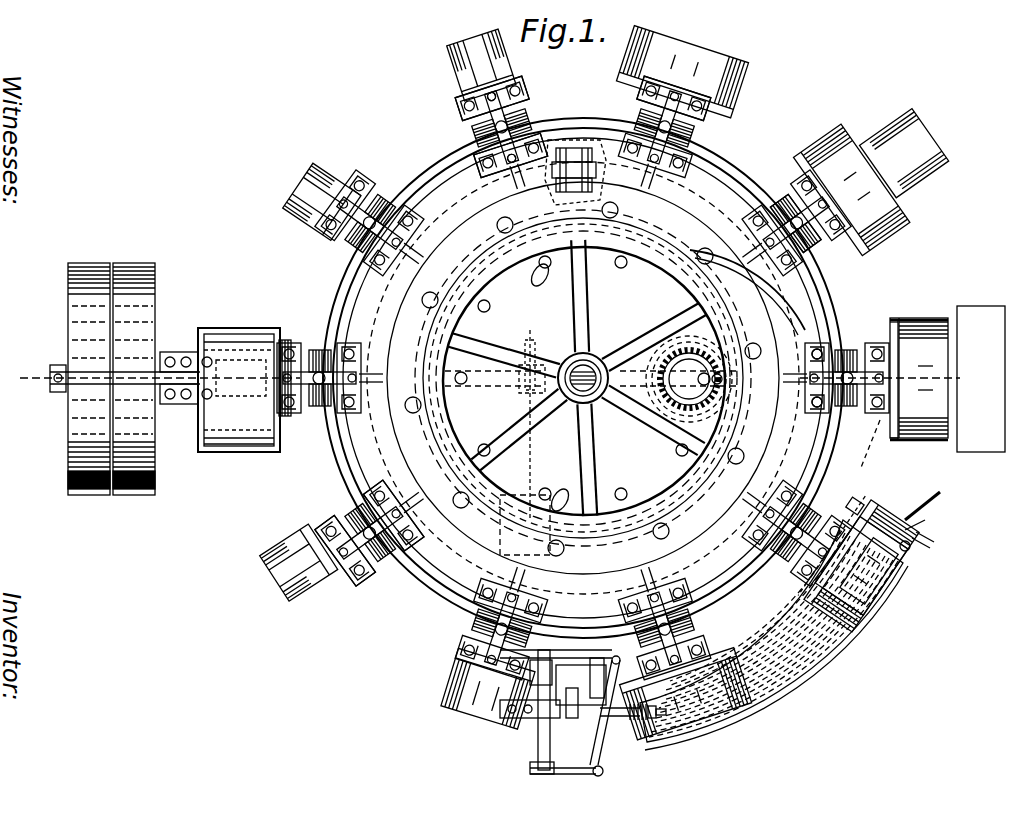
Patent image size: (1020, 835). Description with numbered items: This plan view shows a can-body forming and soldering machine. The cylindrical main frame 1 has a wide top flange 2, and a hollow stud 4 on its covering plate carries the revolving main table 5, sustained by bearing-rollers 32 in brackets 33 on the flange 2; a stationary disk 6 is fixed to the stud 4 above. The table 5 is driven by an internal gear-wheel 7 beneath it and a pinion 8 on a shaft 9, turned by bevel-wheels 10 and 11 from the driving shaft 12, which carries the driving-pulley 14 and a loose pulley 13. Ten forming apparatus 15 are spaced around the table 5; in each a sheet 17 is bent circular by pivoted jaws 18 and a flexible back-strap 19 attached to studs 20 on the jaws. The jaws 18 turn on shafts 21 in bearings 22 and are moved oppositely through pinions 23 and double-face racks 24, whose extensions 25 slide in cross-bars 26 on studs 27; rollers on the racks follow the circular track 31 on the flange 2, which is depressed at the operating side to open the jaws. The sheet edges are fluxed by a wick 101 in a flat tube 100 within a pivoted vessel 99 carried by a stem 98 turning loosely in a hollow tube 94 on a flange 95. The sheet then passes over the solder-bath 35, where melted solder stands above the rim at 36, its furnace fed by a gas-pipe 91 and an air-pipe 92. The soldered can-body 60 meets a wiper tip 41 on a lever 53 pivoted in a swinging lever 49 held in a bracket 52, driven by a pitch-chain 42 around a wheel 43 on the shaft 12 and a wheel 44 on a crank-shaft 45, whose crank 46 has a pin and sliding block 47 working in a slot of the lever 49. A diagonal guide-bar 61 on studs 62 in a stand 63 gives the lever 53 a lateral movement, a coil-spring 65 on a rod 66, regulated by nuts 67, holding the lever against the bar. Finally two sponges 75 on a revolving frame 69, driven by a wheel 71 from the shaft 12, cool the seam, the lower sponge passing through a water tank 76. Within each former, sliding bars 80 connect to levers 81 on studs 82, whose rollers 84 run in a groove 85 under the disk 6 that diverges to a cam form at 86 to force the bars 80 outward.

The main frame 1 is at (416, 568).
The flange 2 is at (445, 518).
The hollow stud 4 is at (519, 429).
The main table 5 is at (370, 485).
The stationary disk 6 is at (440, 452).
The internal gear-wheel 7 is at (676, 280).
The pinion 8 is at (689, 379).
The shaft 9 is at (698, 387).
The bevel-wheel 10 is at (700, 345).
The bevel-wheel 11 is at (641, 450).
The main driving-shaft 12 is at (371, 326).
The loose pulley 13 is at (89, 369).
The main driving-pulley 14 is at (134, 369).
The forming apparatus 15 is at (596, 372).
The sheet 17 is at (981, 379).
The pivoted jaws 18 is at (890, 358).
The flexible back-strap 19 is at (585, 395).
The studs 20 is at (930, 450).
The oscillating shafts 21 is at (570, 290).
The bearings 22 is at (494, 254).
The pinions 23 is at (363, 440).
The double-face racks 24 is at (334, 448).
The cylindrical extension 25 is at (386, 229).
The cross-bars 26 is at (449, 201).
The studs 27 is at (460, 108).
The circular track 31 is at (567, 378).
The bearing-rollers 32 is at (574, 146).
The brackets 33 is at (598, 140).
The solder-bath 35 is at (824, 672).
The raised solder level 36 is at (786, 697).
The wiper tip 41 is at (602, 666).
The pitch-chain 42 is at (541, 475).
The wheel 43 is at (533, 376).
The wheel 44 is at (556, 646).
The crank-shaft 45 is at (559, 659).
The crank 46 is at (581, 685).
The pin and sliding block 47 is at (538, 730).
The swinging lever 49 is at (604, 716).
The bracket 52 is at (500, 718).
The second lever 53 is at (569, 701).
The can-body 60 is at (836, 199).
The diagonal guide-bar 61 is at (608, 712).
The studs 62 is at (583, 708).
The stand 63 is at (527, 759).
The coil-spring 65 is at (636, 723).
The rod 66 is at (651, 724).
The nuts 67 is at (631, 702).
The revolving frame 69 is at (200, 342).
The wheel 71 is at (288, 354).
The sponges 75 is at (125, 390).
The tank 76 is at (244, 444).
The sliding bars 80 is at (632, 289).
The levers 81 is at (564, 378).
The studs 82 is at (629, 380).
The rollers 84 is at (578, 383).
The groove 85 is at (524, 387).
The cam form 86 is at (749, 292).
The gas-pipe 91 is at (930, 500).
The air-pipe 92 is at (879, 571).
The hollow supporting-tube 94 is at (900, 512).
The flange 95 is at (880, 590).
The stem 98 is at (854, 499).
The pivoted vessel 99 is at (916, 524).
The flat tube 100 is at (938, 541).
The wick 101 is at (908, 551).